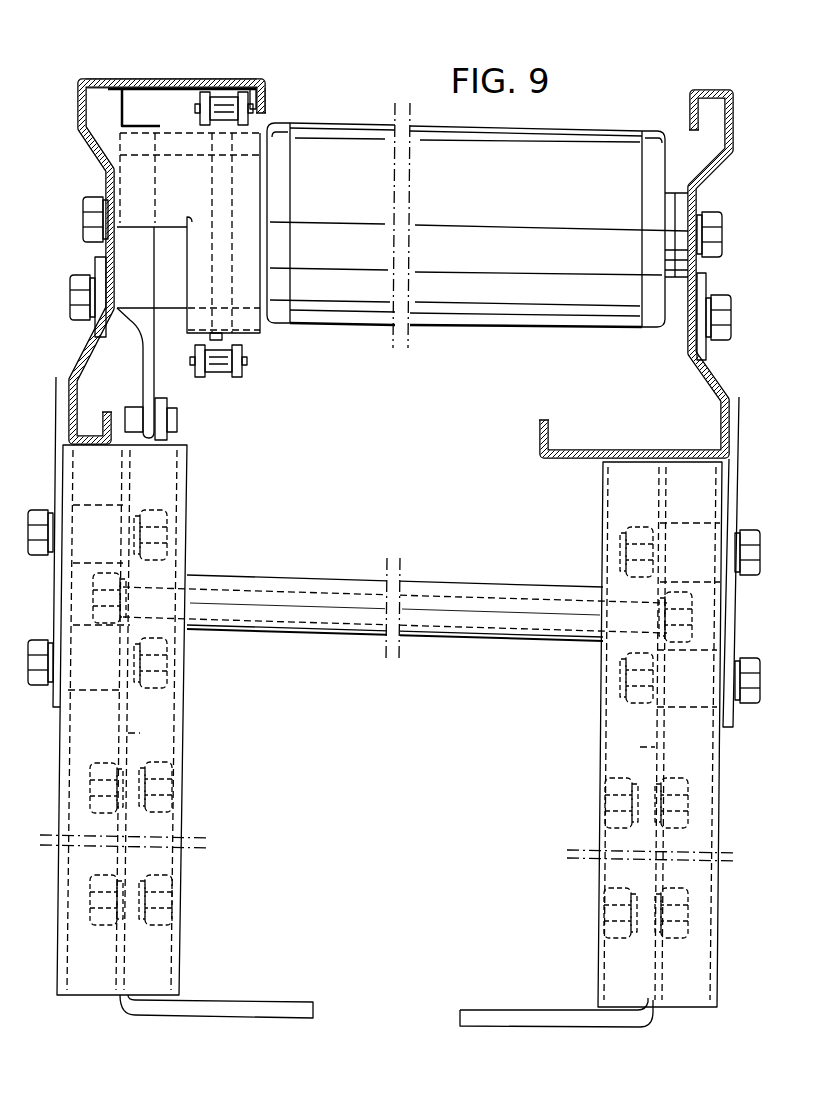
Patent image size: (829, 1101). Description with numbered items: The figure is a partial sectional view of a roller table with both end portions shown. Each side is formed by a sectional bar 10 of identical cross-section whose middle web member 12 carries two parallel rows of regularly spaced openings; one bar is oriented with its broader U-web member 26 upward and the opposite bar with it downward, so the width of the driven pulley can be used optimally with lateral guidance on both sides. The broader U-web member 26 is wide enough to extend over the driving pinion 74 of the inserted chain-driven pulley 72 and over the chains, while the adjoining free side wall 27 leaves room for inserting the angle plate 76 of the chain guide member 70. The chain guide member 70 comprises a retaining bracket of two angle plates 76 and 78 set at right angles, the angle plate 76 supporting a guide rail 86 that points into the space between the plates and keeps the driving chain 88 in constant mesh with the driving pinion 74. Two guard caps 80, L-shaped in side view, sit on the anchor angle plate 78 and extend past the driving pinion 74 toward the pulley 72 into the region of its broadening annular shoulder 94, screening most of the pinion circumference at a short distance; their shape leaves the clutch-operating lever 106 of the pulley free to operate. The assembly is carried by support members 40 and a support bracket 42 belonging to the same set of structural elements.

The sectional bar 10 is at (79, 71).
The middle web member 12 is at (106, 252).
The U-web member 26 is at (161, 77).
The second side wall 27 is at (267, 100).
The support member 40 is at (66, 378).
The support bracket 42 is at (127, 1016).
The chain guide member 70 is at (104, 103).
The chain-driven pulley 72 is at (343, 140).
The driving pinion 74 is at (212, 182).
The angle plate 76 is at (183, 88).
The angle plate 78 is at (130, 112).
The guard cap 80 is at (250, 228).
The guide rail 86 is at (222, 90).
The driving chain 88 is at (199, 110).
The annular shoulder 94 is at (272, 298).
The clutch-operating lever 106 is at (150, 373).